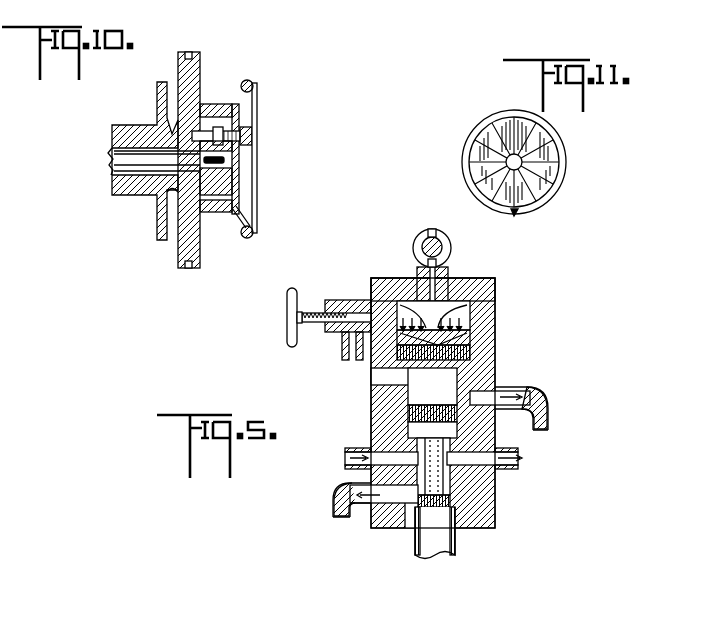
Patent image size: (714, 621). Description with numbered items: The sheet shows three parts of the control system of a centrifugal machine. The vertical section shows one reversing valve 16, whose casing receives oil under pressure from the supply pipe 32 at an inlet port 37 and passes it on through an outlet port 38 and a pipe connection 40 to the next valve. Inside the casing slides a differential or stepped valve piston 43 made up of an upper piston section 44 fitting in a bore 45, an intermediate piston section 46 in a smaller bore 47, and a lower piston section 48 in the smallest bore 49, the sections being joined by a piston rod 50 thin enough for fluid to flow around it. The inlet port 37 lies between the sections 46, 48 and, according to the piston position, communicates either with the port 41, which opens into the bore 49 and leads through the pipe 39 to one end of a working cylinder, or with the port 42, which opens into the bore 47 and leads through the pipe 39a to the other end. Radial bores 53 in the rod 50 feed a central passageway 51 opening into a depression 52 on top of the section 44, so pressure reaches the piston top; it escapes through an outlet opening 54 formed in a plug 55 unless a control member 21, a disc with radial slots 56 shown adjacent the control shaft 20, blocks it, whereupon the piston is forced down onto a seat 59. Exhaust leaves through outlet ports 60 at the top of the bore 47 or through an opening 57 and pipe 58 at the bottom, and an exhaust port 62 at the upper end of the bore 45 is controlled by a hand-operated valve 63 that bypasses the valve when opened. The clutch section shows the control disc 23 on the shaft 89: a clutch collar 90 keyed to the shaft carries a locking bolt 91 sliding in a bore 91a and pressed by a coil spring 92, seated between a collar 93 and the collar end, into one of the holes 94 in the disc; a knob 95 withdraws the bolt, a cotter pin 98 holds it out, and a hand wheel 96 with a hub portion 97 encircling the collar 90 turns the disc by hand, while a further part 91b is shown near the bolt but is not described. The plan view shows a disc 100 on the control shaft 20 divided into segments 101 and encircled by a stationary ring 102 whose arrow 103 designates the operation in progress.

In FIG. 10, the control disc 23 is at (187, 52).
In FIG. 10, the shaft 89 is at (112, 153).
In FIG. 10, the clutch hub or collar 90 is at (232, 206).
In FIG. 10, the locking bolt 91 is at (232, 134).
In FIG. 10, the bore 91a is at (218, 128).
In FIG. 10, the bolt threaded end 91b is at (244, 136).
In FIG. 10, the coil spring 92 is at (225, 160).
In FIG. 10, the collar 93 is at (232, 178).
In FIG. 10, the holes 94 is at (204, 112).
In FIG. 10, the knob 95 is at (253, 137).
In FIG. 10, the hand wheel 96 is at (256, 87).
In FIG. 10, the hub portion 97 is at (215, 215).
In FIG. 10, the cotter pin 98 is at (240, 150).
In FIG. 11, the disc 100 is at (545, 142).
In FIG. 11, the segments 101 is at (547, 164).
In FIG. 11, the stationary ring 102 is at (490, 124).
In FIG. 11, the mark or arrow 103 is at (514, 212).
In FIG. 11, the control shaft 20 is at (522, 166).
In FIG. 5, the control shaft 20 is at (452, 248).
In FIG. 5, the control members 21 is at (414, 245).
In FIG. 5, the radial slots or cut-outs 56 is at (433, 231).
In FIG. 5, the plug 55 is at (450, 272).
In FIG. 5, the outlet opening 54 is at (418, 283).
In FIG. 5, the depression 52 is at (397, 301).
In FIG. 5, the passageway 51 is at (472, 306).
In FIG. 5, the bore 45 is at (474, 320).
In FIG. 5, the piston section 44 is at (470, 342).
In FIG. 5, the reversing valve 16 is at (519, 348).
In FIG. 5, the seat 59 is at (472, 358).
In FIG. 5, the port 42 is at (496, 392).
In FIG. 5, the pipe 39a is at (549, 409).
In FIG. 5, the piston rod 50 is at (496, 436).
In FIG. 5, the differential or stepped valve piston 43 is at (373, 365).
In FIG. 5, the outlet ports 60 is at (380, 376).
In FIG. 5, the bore 47 is at (375, 392).
In FIG. 5, the intermediate piston section 46 is at (410, 414).
In FIG. 5, the inlet port 37 is at (405, 440).
In FIG. 5, the exhaust port 62 is at (372, 315).
In FIG. 5, the hand-operated valve 63 is at (287, 318).
In FIG. 5, the supply pipe 32 is at (347, 468).
In FIG. 5, the pipe 39 is at (332, 510).
In FIG. 5, the port 41 is at (395, 522).
In FIG. 5, the opening 57 is at (412, 515).
In FIG. 5, the lower piston section 48 is at (425, 540).
In FIG. 5, the pipe 58 is at (450, 556).
In FIG. 5, the bore 49 is at (480, 530).
In FIG. 5, the radial bores 53 is at (450, 502).
In FIG. 5, the outlet ports 38 is at (462, 476).
In FIG. 5, the pipe connections 40 is at (515, 470).